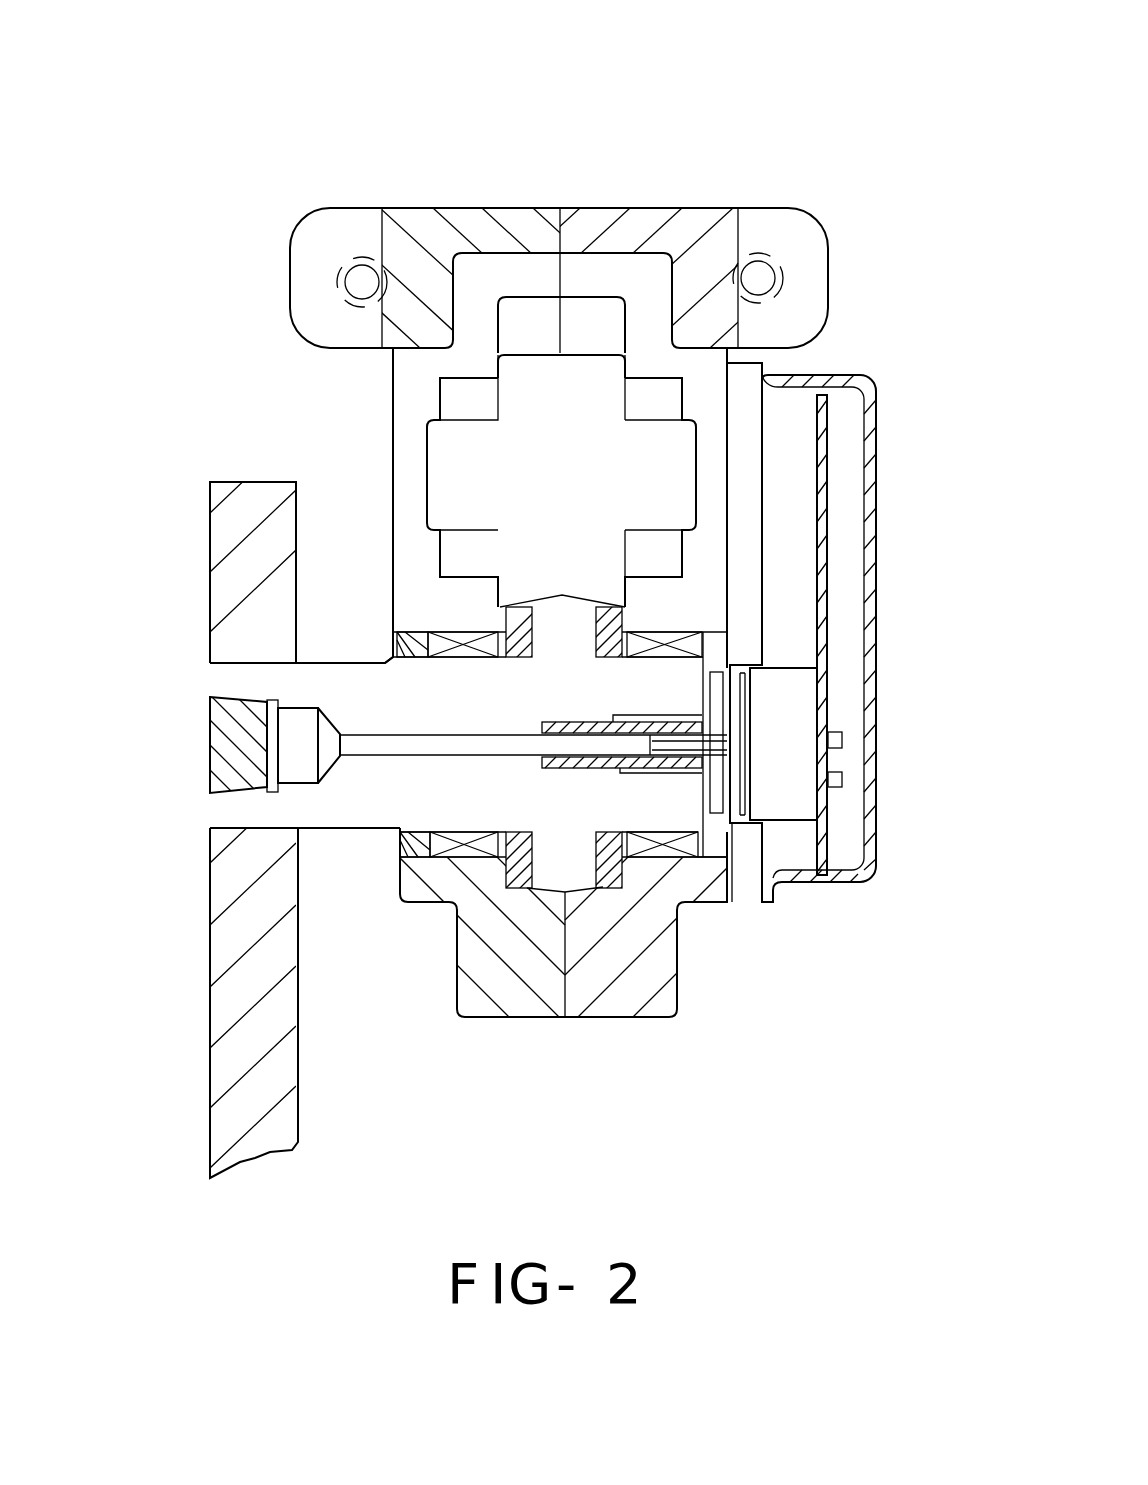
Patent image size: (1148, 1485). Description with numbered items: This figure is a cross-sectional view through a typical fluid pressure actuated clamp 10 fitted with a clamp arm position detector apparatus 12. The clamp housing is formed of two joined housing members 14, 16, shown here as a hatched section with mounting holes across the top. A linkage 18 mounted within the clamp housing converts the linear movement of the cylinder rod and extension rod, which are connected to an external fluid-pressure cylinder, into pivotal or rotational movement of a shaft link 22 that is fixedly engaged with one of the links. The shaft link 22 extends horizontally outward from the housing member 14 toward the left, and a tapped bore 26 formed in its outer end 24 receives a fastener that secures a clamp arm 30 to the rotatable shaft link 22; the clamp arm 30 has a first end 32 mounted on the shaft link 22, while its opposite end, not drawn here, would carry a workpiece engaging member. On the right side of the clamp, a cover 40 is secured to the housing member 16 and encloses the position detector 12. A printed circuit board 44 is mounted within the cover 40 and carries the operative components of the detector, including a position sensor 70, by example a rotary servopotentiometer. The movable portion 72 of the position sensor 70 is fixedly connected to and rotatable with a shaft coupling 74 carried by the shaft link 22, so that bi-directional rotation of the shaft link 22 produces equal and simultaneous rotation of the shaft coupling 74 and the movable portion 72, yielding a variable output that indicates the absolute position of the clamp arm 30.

The fluid pressure actuated clamp 10 is at (570, 544).
The clamp arm position detector apparatus 12 is at (792, 410).
The housing member 14 is at (407, 222).
The housing member 16 is at (788, 217).
The linkage 18 is at (523, 373).
The shaft link 22 is at (337, 812).
The outer end 24 is at (232, 682).
The tapped bore 26 is at (223, 748).
The clamp arm 30 is at (240, 988).
The first end 32 is at (233, 1097).
The cover 40 is at (877, 738).
The printed circuit board 44 is at (828, 500).
The position sensor 70 is at (787, 803).
The movable portion 72 is at (713, 810).
The shaft coupling 74 is at (548, 778).